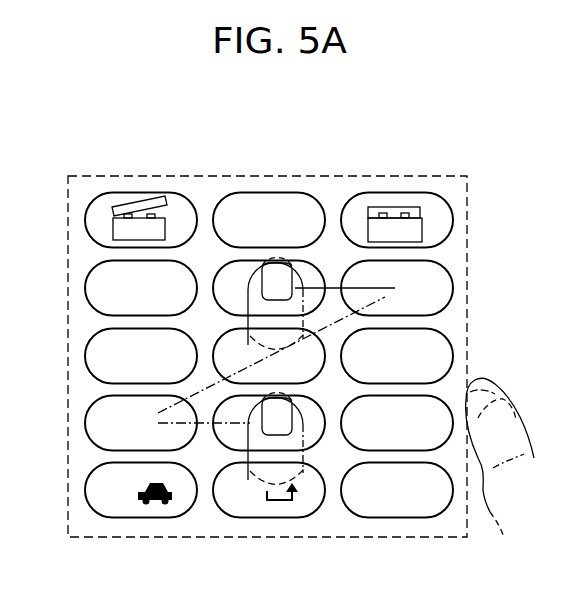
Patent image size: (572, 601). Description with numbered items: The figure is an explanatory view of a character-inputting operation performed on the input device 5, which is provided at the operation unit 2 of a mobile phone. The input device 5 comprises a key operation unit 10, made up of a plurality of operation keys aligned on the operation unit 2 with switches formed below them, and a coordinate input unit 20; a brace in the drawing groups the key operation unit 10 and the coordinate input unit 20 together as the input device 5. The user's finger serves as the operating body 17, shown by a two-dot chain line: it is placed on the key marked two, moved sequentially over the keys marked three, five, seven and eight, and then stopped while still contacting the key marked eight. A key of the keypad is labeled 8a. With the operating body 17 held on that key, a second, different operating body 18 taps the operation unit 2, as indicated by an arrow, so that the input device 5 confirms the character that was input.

The operation unit 2 is at (334, 172).
The input device 5 is at (515, 73).
The key 8a is at (85, 283).
The key operation unit 10 is at (449, 192).
The operating body 17 is at (250, 288).
The operating body 18 is at (500, 472).
The coordinate input unit 20 is at (423, 172).